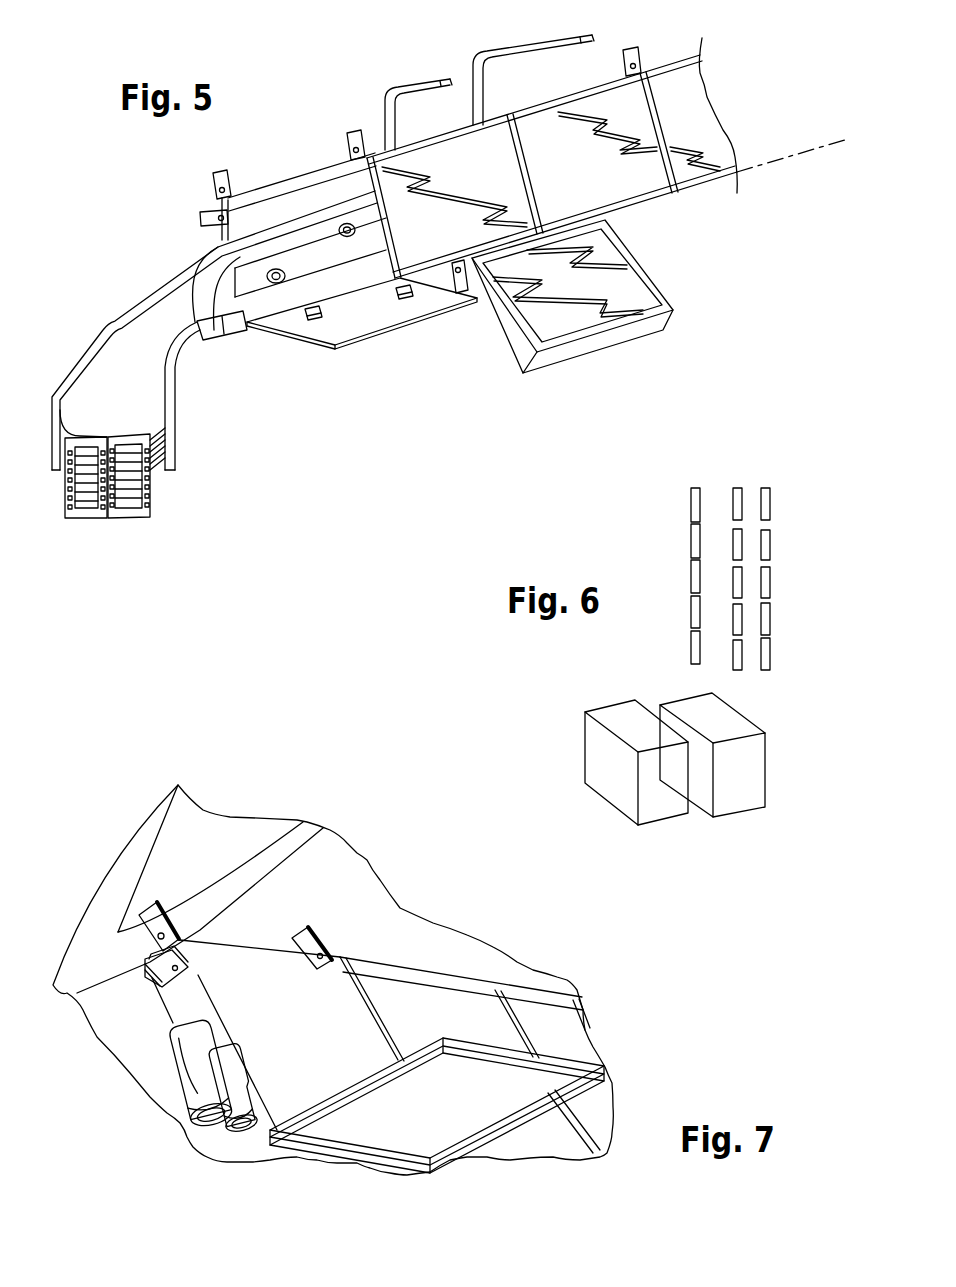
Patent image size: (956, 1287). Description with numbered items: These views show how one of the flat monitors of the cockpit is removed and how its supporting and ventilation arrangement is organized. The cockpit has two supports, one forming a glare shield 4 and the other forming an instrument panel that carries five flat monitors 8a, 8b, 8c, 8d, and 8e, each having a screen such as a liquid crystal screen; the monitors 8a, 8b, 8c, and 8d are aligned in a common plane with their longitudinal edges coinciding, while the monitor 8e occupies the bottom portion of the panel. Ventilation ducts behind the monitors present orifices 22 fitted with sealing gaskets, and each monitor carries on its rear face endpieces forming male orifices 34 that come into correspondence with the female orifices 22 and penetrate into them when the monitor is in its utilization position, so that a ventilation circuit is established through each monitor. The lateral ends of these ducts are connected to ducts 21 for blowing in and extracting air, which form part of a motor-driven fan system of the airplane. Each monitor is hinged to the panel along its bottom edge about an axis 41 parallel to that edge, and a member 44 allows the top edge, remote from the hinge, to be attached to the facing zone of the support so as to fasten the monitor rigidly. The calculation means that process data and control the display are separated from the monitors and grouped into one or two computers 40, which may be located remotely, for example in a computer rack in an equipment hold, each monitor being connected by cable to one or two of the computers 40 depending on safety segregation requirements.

In FIG. 7, the glare shield 4 is at (103, 997).
In FIG. 5, the flat monitor 8a is at (357, 312).
In FIG. 6, the flat monitor 8a is at (770, 503).
In FIG. 7, the flat monitor 8a is at (407, 993).
In FIG. 5, the flat monitor 8b is at (497, 180).
In FIG. 6, the flat monitor 8b is at (770, 548).
In FIG. 5, the flat monitor 8c is at (550, 150).
In FIG. 6, the flat monitor 8c is at (770, 590).
In FIG. 5, the flat monitor 8d is at (693, 120).
In FIG. 6, the flat monitor 8d is at (770, 617).
In FIG. 5, the flat monitor 8e is at (637, 290).
In FIG. 6, the flat monitor 8e is at (770, 658).
In FIG. 5, the duct 21 is at (222, 338).
In FIG. 7, the duct 21 is at (178, 1127).
In FIG. 5, the female orifice 22 is at (283, 270).
In FIG. 5, the male orifice 34 is at (310, 320).
In FIG. 6, the computer 40 is at (738, 775).
In FIG. 5, the axis 41 is at (823, 147).
In FIG. 7, the member 44 is at (185, 940).